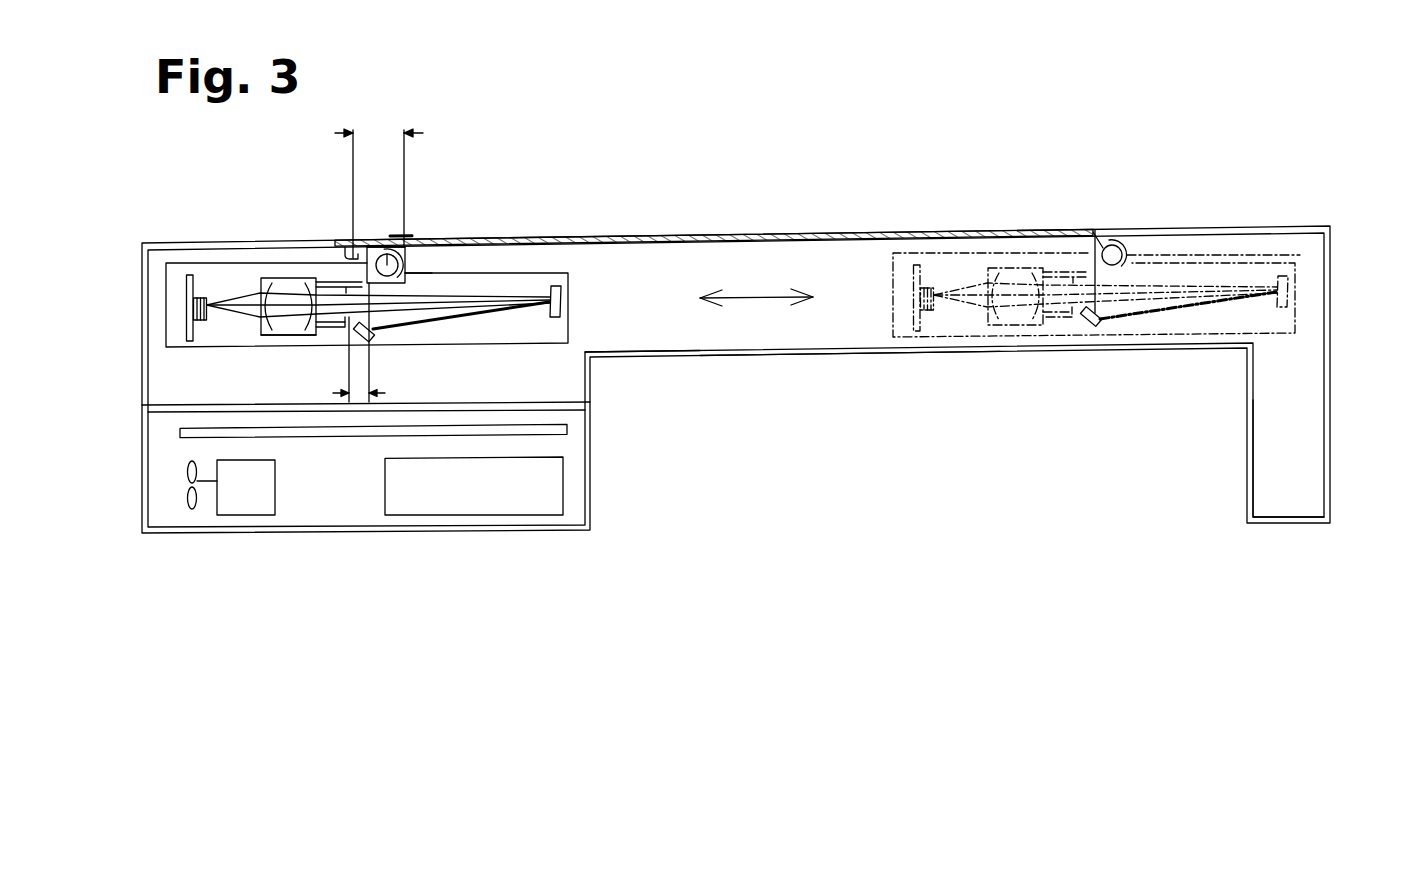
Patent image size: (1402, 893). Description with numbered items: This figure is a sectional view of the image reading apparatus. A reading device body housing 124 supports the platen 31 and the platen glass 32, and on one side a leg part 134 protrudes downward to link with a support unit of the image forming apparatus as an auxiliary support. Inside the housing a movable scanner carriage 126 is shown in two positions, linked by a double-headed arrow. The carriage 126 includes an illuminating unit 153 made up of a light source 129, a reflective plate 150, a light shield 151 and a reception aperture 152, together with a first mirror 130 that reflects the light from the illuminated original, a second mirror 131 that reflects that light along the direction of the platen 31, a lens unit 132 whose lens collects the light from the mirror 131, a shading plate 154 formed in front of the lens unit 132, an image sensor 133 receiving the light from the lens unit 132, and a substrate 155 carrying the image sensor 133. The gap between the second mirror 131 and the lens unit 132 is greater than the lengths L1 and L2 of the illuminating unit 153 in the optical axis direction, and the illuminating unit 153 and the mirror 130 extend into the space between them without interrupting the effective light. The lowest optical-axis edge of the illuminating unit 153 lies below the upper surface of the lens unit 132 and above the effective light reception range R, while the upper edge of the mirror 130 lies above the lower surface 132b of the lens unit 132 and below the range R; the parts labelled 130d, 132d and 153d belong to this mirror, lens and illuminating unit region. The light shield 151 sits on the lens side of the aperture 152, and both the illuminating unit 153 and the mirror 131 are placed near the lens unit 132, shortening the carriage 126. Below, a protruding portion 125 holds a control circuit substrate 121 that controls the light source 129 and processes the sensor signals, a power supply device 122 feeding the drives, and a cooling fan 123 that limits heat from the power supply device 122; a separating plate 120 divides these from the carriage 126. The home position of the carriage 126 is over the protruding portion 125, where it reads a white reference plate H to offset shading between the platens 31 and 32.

The platen 31 is at (767, 233).
The platen glass 32 is at (366, 250).
The separating plate 120 is at (168, 402).
The control circuit substrate 121 is at (183, 437).
The power supply device 122 is at (488, 505).
The cooling fan 123 is at (210, 511).
The reading device body housing 124 is at (845, 353).
The protruding portion 125 is at (330, 512).
The scanner carriage 126 is at (558, 358).
The light source 129 is at (385, 247).
The first mirror 130 is at (388, 347).
The bracket of optical unit 130d is at (345, 330).
The second mirror 131 is at (561, 301).
The lens unit 132 is at (273, 287).
The lower surface of the lens unit 132b is at (272, 337).
The lens holder upper part 132d is at (290, 279).
The image sensor 133 is at (202, 297).
The leg part 134 is at (1313, 447).
The reflective plate 150 is at (407, 260).
The light shield 151 is at (346, 247).
The reception aperture 152 is at (374, 338).
The illuminating unit 153 is at (477, 313).
The beam path opening 153d is at (416, 282).
The shading plate 154 is at (345, 328).
The substrate 155 is at (186, 278).
The white reference plate H is at (400, 235).
The effective light reception range R is at (503, 297).
The length L1 is at (379, 181).
The length L2 is at (359, 342).